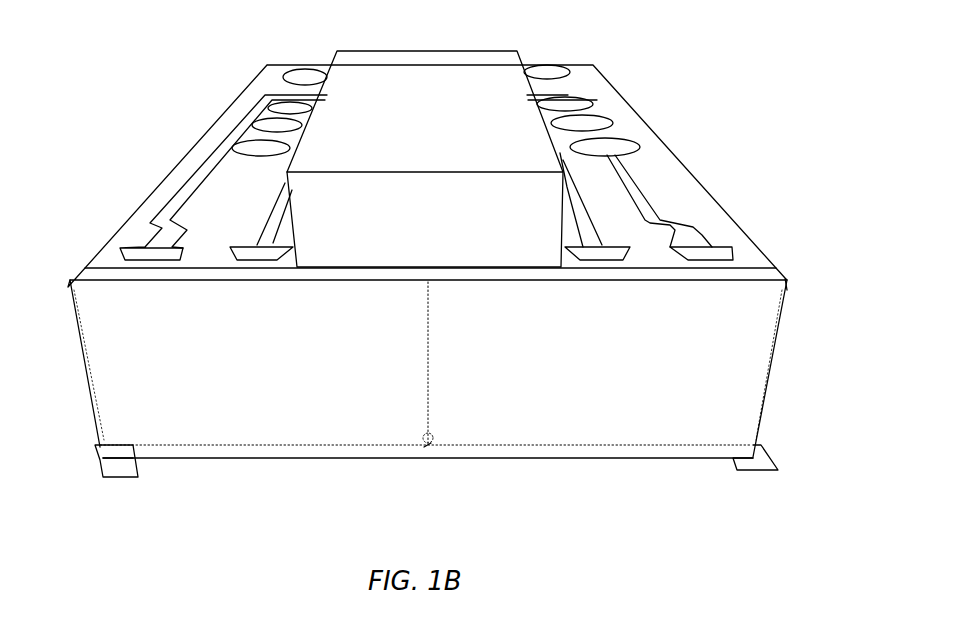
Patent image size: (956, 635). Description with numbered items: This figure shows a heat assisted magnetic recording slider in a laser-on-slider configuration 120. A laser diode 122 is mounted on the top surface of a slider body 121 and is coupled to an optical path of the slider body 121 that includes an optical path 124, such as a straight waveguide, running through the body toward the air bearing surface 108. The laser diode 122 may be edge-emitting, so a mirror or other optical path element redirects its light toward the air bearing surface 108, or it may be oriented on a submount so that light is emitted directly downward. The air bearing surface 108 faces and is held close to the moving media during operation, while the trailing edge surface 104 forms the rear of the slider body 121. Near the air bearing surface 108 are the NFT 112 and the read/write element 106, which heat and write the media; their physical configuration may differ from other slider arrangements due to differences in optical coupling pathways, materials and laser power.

The laser-on-slider configuration 120 is at (700, 106).
The slider body 121 is at (110, 237).
The laser diode 122 is at (503, 60).
The optical path 124 is at (430, 348).
The trailing edge surface 104 is at (123, 478).
The air bearing surface 108 is at (770, 473).
The read/write element 106 is at (433, 443).
The NFT 112 is at (430, 447).